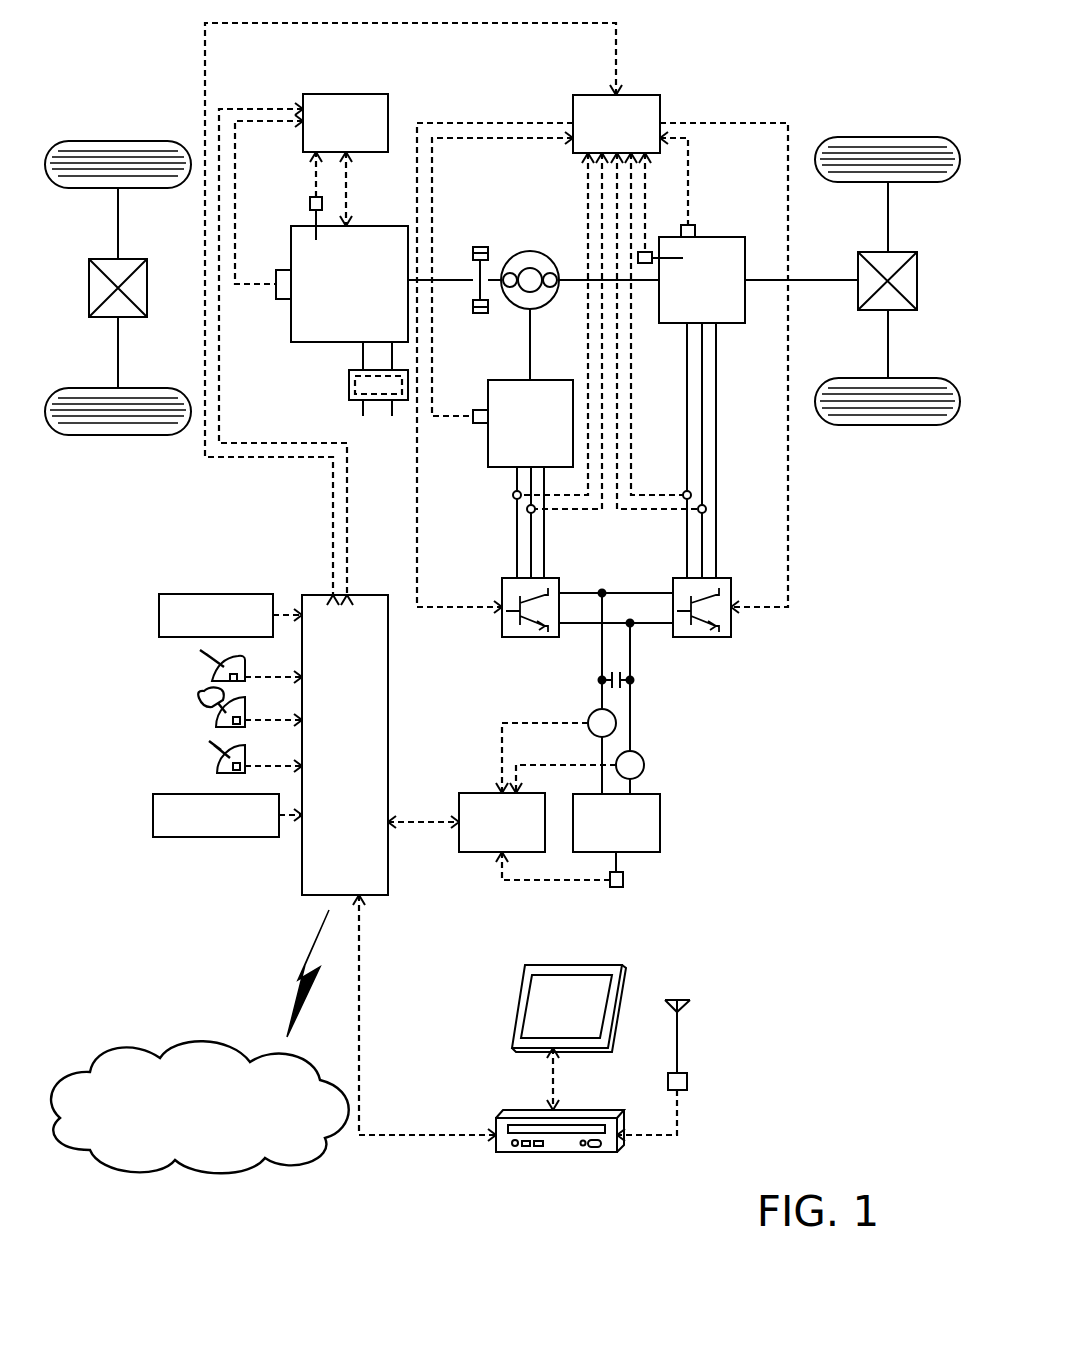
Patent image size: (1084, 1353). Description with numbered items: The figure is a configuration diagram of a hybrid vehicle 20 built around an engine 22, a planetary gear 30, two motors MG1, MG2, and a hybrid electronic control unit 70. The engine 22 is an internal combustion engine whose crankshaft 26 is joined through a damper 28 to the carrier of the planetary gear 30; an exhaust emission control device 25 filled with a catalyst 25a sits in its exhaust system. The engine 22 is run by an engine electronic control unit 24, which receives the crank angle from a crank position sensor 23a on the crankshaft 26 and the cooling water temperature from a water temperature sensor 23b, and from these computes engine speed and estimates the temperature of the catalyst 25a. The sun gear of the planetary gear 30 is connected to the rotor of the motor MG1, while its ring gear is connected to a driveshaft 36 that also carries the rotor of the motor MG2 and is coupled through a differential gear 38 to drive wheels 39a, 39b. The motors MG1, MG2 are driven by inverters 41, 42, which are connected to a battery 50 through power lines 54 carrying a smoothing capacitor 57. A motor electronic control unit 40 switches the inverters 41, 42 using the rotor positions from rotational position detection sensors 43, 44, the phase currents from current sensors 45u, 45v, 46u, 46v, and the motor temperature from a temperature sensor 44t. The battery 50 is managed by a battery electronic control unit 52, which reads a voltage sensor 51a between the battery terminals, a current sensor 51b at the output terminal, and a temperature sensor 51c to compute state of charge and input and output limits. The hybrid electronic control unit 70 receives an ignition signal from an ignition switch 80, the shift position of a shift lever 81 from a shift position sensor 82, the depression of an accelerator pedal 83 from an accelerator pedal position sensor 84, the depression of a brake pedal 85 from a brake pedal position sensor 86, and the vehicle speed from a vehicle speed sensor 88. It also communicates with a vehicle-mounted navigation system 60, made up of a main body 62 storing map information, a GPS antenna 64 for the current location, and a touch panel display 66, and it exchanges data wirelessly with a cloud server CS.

The hybrid vehicle 20 is at (731, 65).
The engine 22 is at (365, 226).
The crank position sensor 23a is at (284, 299).
The water temperature sensor 23b is at (310, 203).
The engine electronic control unit 24 is at (366, 94).
The exhaust emission control device 25 is at (349, 376).
The catalyst 25a is at (356, 390).
The crankshaft 26 is at (452, 278).
The damper 28 is at (480, 247).
The planetary gear 30 is at (530, 251).
The driveshaft 36 is at (828, 278).
The differential gear 38 is at (897, 252).
The drive wheel 39a is at (886, 137).
The drive wheel 39b is at (888, 425).
The motor electronic control unit 40 is at (637, 95).
The inverter 41 is at (554, 578).
The inverter 42 is at (725, 578).
The rotational position detection sensor 43 is at (481, 424).
The rotational position detection sensor 44 is at (690, 225).
The temperature sensor 44t is at (645, 263).
The current sensor 45u is at (512, 495).
The current sensor 45v is at (526, 509).
The current sensor 46u is at (692, 495).
The current sensor 46v is at (707, 509).
The battery 50 is at (662, 822).
The voltage sensor 51a is at (644, 762).
The current sensor 51b is at (616, 720).
The temperature sensor 51c is at (625, 879).
The battery electronic control unit 52 is at (481, 793).
The power lines 54 is at (603, 655).
The capacitor 57 is at (626, 676).
The vehicle-mounted navigation system 60 is at (483, 995).
The main body 62 is at (558, 1152).
The GPS antenna 64 is at (668, 1080).
The touch panel display 66 is at (568, 965).
The hybrid electronic control unit 70 is at (366, 595).
The ignition switch 80 is at (159, 618).
The shift lever 81 is at (204, 654).
The shift position sensor 82 is at (212, 678).
The accelerator pedal 83 is at (199, 697).
The accelerator pedal position sensor 84 is at (216, 722).
The brake pedal 85 is at (212, 744).
The brake pedal position sensor 86 is at (217, 769).
The vehicle speed sensor 88 is at (153, 818).
The motor MG1 is at (500, 380).
The motor MG2 is at (735, 237).
The cloud server CS is at (215, 1163).